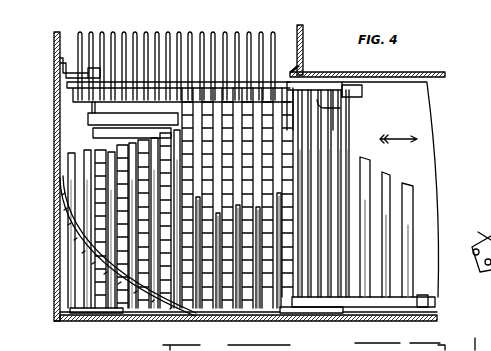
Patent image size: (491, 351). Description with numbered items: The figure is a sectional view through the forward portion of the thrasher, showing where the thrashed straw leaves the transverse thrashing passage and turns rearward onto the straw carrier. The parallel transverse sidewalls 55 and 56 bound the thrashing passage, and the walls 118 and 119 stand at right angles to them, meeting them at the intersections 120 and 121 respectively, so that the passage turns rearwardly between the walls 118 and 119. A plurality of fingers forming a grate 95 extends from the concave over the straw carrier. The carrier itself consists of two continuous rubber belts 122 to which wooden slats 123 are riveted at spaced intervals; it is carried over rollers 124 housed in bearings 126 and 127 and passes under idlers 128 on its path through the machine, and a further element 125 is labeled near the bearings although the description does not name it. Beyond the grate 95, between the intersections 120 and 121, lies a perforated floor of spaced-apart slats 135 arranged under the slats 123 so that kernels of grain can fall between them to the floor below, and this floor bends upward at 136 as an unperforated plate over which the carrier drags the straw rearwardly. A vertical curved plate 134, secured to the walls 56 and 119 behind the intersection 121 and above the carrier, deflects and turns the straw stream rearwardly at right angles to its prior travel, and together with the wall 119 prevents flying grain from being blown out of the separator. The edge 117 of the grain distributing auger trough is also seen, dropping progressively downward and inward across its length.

The sidewall 56 is at (54, 127).
The sidewall 55 is at (303, 42).
The wall 118 is at (370, 72).
The intersection 120 is at (303, 70).
The rubber belts 122 is at (360, 93).
The idlers 128 is at (340, 108).
The bearing 127 is at (97, 68).
The grate 95 is at (263, 33).
The slats 135 is at (133, 125).
The link 125 is at (92, 133).
The unperforated plate 136 is at (398, 151).
The wooden slats 123 is at (408, 205).
The vertical curved plate 134 is at (61, 235).
The intersection 121 is at (56, 320).
The bearing 126 is at (90, 321).
The rollers 124 is at (112, 313).
The edge of the trough 117 is at (320, 348).
The wall 119 is at (420, 318).